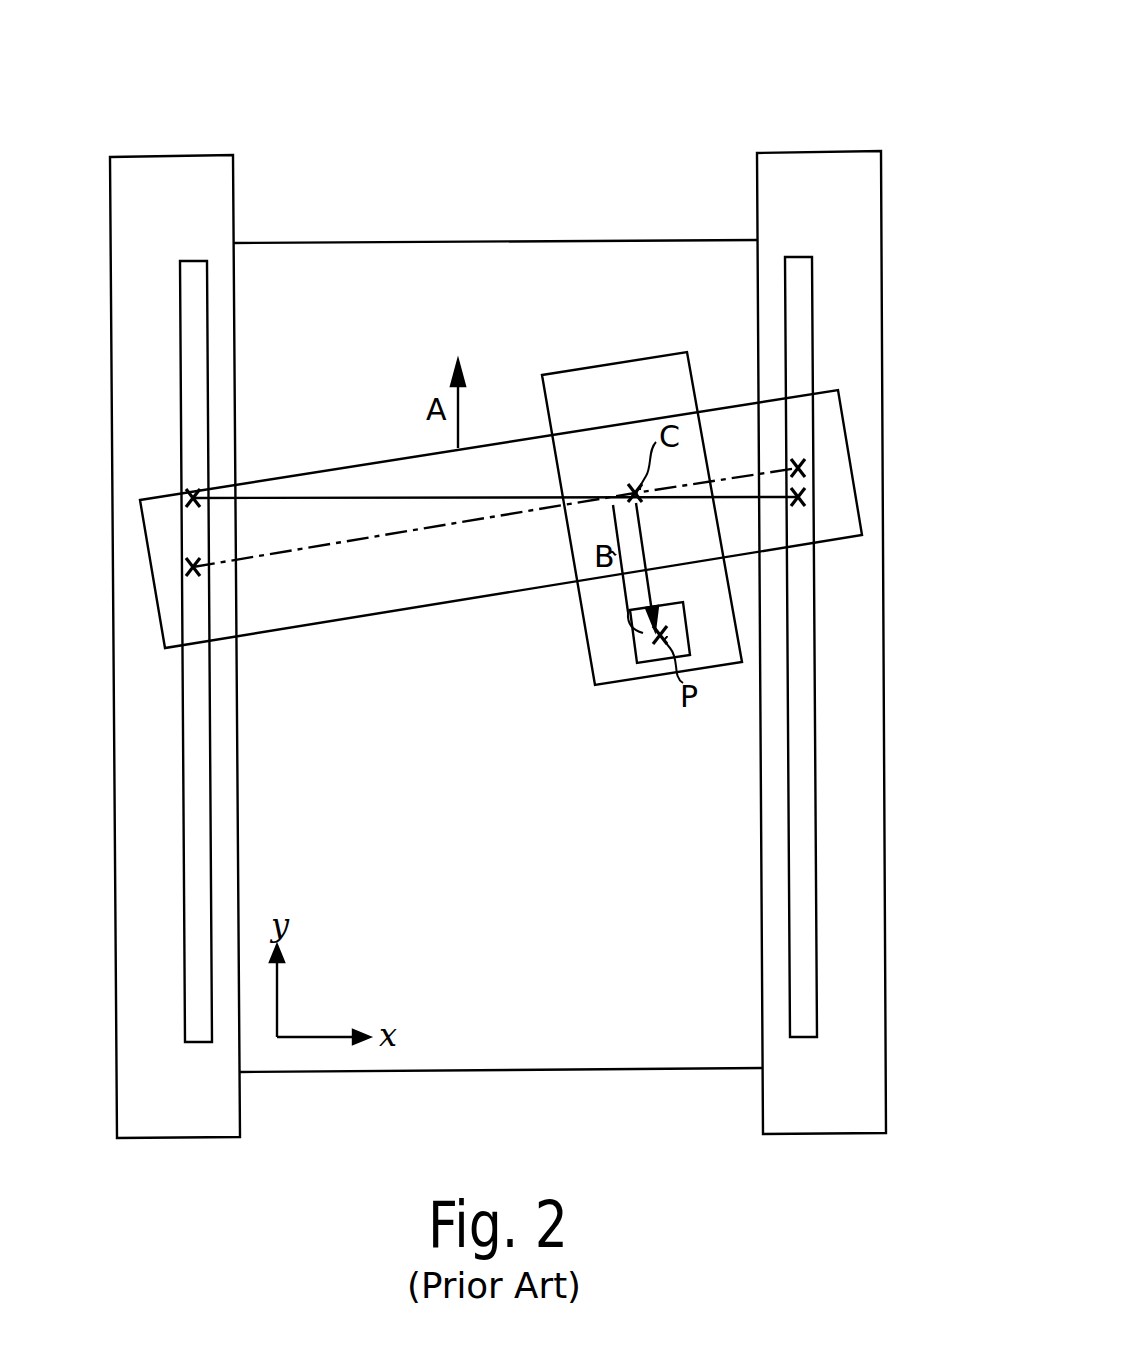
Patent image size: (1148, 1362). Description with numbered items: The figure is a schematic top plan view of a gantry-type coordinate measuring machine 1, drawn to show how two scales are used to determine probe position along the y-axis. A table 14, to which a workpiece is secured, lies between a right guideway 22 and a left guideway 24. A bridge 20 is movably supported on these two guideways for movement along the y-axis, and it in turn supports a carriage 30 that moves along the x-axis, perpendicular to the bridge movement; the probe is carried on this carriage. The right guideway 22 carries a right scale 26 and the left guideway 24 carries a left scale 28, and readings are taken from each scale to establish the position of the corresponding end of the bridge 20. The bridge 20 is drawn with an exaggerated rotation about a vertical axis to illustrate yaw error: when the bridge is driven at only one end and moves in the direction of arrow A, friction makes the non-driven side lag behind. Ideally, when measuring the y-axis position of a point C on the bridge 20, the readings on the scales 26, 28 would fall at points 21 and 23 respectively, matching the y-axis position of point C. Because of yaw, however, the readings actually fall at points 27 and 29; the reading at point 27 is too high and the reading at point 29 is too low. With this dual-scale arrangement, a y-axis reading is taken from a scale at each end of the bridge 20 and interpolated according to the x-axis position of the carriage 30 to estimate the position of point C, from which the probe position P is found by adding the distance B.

The coordinate measuring machine 1 is at (748, 98).
The table 14 is at (521, 869).
The bridge 20 is at (350, 603).
The point 21 is at (810, 497).
The right guideway 22 is at (822, 168).
The point 23 is at (185, 498).
The left guideway 24 is at (153, 177).
The right scale 26 is at (800, 282).
The point 27 is at (810, 468).
The left scale 28 is at (195, 275).
The point 29 is at (185, 567).
The carriage 30 is at (600, 400).